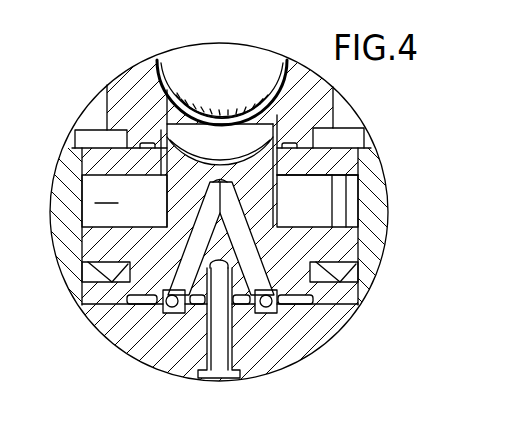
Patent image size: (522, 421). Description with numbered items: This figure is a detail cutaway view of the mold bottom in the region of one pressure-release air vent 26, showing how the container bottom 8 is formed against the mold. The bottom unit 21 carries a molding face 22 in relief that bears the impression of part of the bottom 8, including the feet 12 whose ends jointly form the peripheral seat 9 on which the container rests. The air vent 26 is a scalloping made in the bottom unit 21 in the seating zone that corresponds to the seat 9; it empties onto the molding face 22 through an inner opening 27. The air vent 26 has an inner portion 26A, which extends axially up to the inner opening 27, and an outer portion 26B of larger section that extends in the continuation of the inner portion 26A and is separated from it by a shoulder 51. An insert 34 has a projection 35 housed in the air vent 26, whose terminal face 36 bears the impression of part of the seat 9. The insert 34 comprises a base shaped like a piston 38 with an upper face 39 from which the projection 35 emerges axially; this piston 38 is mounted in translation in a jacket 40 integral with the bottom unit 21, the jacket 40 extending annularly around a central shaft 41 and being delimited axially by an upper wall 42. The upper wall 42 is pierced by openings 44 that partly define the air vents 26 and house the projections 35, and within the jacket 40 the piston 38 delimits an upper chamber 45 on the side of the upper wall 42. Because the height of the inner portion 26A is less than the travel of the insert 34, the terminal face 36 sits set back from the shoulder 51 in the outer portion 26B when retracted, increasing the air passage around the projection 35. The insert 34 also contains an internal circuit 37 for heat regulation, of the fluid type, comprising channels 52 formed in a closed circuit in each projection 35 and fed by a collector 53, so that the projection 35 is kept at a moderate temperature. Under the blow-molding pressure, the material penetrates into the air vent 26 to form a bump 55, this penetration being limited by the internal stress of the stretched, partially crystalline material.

The bottom 8 is at (158, 61).
The peripheral seat 9 is at (233, 103).
The feet 12 is at (218, 110).
The bottom unit 21 is at (324, 120).
The molding face 22 is at (272, 65).
The pressure-release air vent 26 is at (90, 118).
The inner portion of the air vent 26A is at (168, 106).
The outer portion of the air vent 26B is at (163, 130).
The inner opening 27 is at (168, 86).
The insert 34 is at (361, 250).
The projection 35 is at (268, 201).
The terminal face 36 is at (202, 162).
The internal circuit for heat regulation 37 is at (175, 263).
The piston 38 is at (90, 246).
The upper face 39 is at (149, 222).
The jacket 40 is at (78, 197).
The central shaft 41 is at (52, 210).
The upper wall 42 is at (128, 172).
The openings 44 is at (284, 166).
The upper chamber 45 is at (106, 192).
The shoulder 51 is at (166, 124).
The channels 52 is at (211, 210).
The collector 53 is at (170, 313).
The bump 55 is at (236, 120).